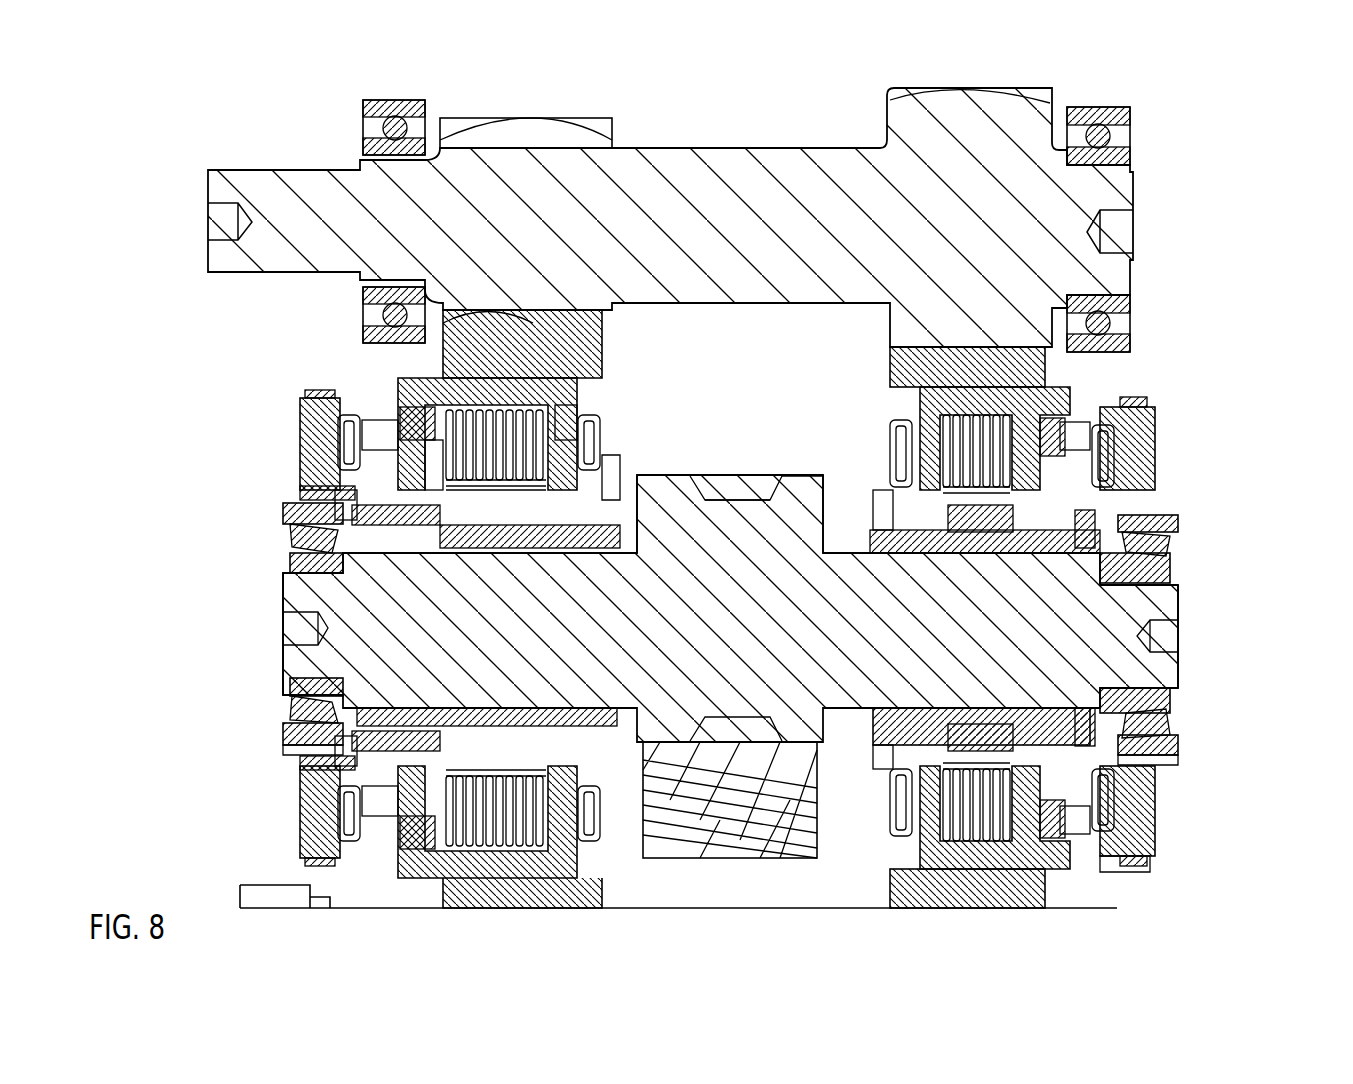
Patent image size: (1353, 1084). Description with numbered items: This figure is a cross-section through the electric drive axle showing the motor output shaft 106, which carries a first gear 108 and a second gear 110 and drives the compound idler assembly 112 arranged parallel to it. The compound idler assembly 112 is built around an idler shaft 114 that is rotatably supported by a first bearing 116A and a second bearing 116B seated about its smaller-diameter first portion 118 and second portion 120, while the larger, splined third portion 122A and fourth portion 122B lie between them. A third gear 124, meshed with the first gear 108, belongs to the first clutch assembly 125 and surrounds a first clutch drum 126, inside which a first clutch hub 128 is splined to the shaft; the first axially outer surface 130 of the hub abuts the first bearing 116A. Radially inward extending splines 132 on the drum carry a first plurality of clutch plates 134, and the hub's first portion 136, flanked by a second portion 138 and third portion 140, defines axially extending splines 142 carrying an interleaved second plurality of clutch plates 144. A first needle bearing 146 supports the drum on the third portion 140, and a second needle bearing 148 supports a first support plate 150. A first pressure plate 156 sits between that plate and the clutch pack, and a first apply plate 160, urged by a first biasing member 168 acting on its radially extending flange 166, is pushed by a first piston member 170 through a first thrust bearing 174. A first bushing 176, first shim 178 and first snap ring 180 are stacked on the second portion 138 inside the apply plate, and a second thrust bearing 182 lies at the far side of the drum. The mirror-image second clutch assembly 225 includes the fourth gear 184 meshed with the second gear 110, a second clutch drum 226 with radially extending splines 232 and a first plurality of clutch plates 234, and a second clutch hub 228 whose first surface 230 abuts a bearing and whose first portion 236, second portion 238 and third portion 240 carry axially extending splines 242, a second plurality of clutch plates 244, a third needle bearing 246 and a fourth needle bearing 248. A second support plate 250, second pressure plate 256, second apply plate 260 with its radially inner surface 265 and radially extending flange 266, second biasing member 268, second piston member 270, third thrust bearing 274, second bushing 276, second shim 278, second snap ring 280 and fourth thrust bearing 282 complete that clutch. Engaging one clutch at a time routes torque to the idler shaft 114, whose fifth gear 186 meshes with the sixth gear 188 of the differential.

The motor output shaft 106 is at (262, 170).
The first gear 108 is at (580, 118).
The second gear 110 is at (970, 88).
The compound idler assembly 112 is at (230, 515).
The idler shaft 114 is at (720, 640).
The first bearing 116A is at (288, 510).
The second bearing 116B is at (1172, 528).
The first portion 118 is at (300, 592).
The second portion 120 is at (1150, 600).
The third portion 122A is at (640, 570).
The fourth portion 122B is at (835, 485).
The third gear 124 is at (575, 355).
The first clutch assembly 125 is at (235, 355).
The first clutch drum 126 is at (590, 392).
The first clutch hub 128 is at (612, 482).
The first axially outer surface 130 is at (300, 752).
The radially inward extending splines 132 is at (410, 450).
The first plurality of clutch plates 134 is at (540, 402).
The first portion 136 is at (505, 812).
The second portion 138 is at (425, 785).
The third portion 140 is at (590, 762).
The axially extending splines 142 is at (470, 862).
The second plurality of clutch plates 144 is at (425, 410).
The first needle bearing 146 is at (598, 448).
The second needle bearing 148 is at (345, 445).
The first support plate 150 is at (315, 393).
The first pressure plate 156 is at (380, 430).
The first apply plate 160 is at (315, 440).
The radially extending flange 166 is at (325, 862).
The first biasing member 168 is at (370, 877).
The first piston member 170 is at (320, 800).
The first thrust bearing 174 is at (340, 812).
The first bushing 176 is at (470, 550).
The first shim 178 is at (400, 527).
The first snap ring 180 is at (345, 522).
The second thrust bearing 182 is at (600, 430).
The fourth gear 184 is at (1115, 325).
The fifth gear 186 is at (758, 495).
The sixth gear 188 is at (720, 845).
The second clutch assembly 225 is at (1250, 380).
The second clutch drum 226 is at (880, 368).
The second clutch hub 228 is at (788, 490).
The first surface 230 is at (1165, 758).
The radially extending splines 232 is at (1020, 750).
The first plurality of clutch plates 234 is at (925, 396).
The first portion 236 is at (975, 805).
The second portion 238 is at (1090, 822).
The third portion 240 is at (900, 805).
The axially extending splines 242 is at (1052, 805).
The second plurality of clutch plates 244 is at (1050, 430).
The third needle bearing 246 is at (898, 470).
The fourth needle bearing 248 is at (1115, 462).
The second support plate 250 is at (1125, 432).
The second pressure plate 256 is at (1135, 398).
The second apply plate 260 is at (1150, 435).
The radially inner surface 265 is at (1150, 765).
The radially extending flange 266 is at (1140, 860).
The second biasing member 268 is at (1145, 860).
The second piston member 270 is at (1158, 822).
The third thrust bearing 274 is at (1115, 805).
The second bushing 276 is at (975, 550).
The second shim 278 is at (1030, 552).
The second snap ring 280 is at (1085, 550).
The fourth thrust bearing 282 is at (905, 485).